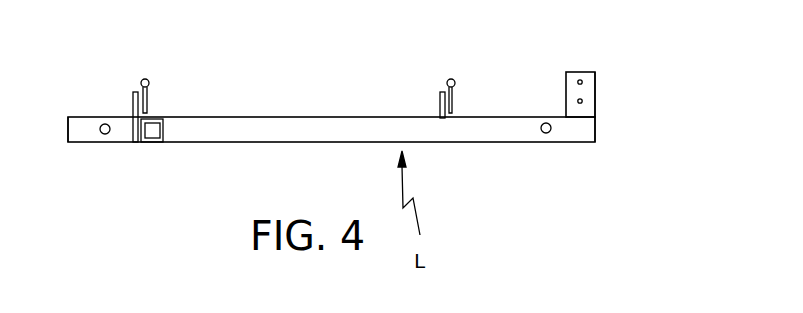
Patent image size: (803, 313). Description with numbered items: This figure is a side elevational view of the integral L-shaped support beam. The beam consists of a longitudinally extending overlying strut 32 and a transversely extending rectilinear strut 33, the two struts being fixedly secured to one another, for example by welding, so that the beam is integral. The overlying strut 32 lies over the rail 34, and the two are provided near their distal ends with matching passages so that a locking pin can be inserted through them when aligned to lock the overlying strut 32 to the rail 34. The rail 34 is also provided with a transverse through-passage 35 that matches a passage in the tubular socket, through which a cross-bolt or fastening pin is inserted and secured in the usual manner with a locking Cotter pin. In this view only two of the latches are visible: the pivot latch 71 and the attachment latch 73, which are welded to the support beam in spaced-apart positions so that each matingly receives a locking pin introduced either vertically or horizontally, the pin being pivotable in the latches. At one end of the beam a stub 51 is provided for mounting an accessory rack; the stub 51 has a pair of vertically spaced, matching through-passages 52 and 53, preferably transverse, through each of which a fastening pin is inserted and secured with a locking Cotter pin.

The overlying strut 32 is at (500, 143).
The rectilinear strut 33 is at (166, 130).
The rail 34 is at (90, 143).
The through-passage 35 is at (100, 125).
The stub 51 is at (605, 113).
The through-passage 52 is at (597, 76).
The through-passage 53 is at (577, 100).
The pivot latch 71 is at (438, 95).
The attachment latch 73 is at (132, 100).